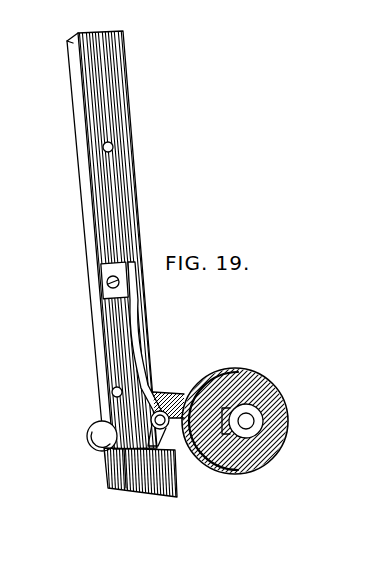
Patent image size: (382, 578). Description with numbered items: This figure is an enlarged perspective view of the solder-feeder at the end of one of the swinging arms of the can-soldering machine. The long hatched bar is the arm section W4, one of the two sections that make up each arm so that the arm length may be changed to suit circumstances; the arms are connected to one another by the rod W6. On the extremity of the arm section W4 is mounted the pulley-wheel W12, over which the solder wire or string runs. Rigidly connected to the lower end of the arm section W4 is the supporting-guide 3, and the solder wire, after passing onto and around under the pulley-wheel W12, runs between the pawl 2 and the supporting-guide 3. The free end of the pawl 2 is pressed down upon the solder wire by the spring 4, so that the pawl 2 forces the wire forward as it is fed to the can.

The arm section W4 is at (128, 192).
The spring 4 is at (131, 336).
The rod W6 is at (112, 397).
The pawl 2 is at (157, 428).
The supporting-guide 3 is at (168, 468).
The pulley-wheel W12 is at (237, 378).